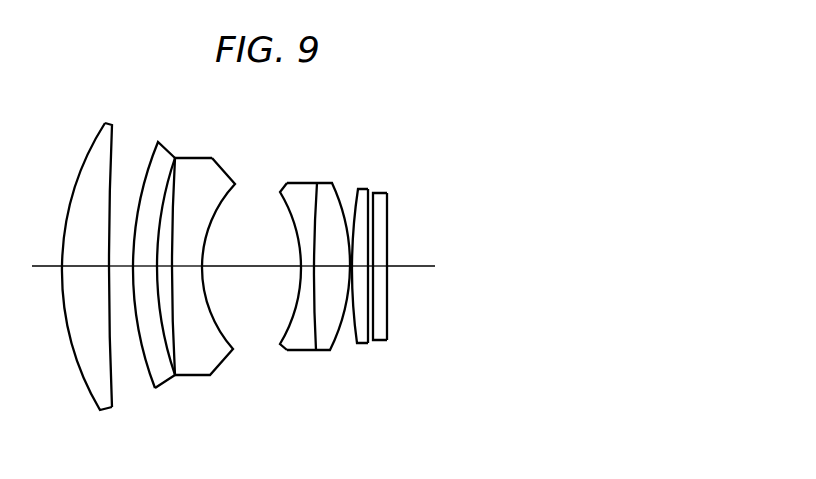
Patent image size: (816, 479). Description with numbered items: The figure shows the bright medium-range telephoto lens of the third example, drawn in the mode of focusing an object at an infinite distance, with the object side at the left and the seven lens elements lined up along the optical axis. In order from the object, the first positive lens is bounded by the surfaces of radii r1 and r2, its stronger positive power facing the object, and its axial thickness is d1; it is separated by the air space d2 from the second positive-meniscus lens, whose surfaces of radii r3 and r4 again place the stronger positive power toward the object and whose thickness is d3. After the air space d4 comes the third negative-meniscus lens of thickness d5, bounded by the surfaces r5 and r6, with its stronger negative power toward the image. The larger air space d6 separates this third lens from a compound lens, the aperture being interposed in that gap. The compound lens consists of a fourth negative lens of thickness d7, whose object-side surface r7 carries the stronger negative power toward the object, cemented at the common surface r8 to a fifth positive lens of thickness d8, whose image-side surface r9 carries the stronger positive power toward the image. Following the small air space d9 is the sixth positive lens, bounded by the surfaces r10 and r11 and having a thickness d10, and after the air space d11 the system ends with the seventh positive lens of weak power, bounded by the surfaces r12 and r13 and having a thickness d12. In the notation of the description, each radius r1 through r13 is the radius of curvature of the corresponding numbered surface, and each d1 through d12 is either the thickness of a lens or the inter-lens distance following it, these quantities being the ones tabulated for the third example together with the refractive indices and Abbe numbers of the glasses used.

The radius of curvature of the first surface r1 is at (92, 143).
The radius of curvature of the second surface r2 is at (115, 148).
The radius of curvature of the third surface r3 is at (136, 162).
The radius of curvature of the fourth surface r4 is at (167, 167).
The radius of curvature of the fifth surface r5 is at (180, 170).
The radius of curvature of the sixth surface r6 is at (216, 214).
The radius of curvature of the seventh surface r7 is at (285, 207).
The radius of curvature of the eighth surface r8 is at (315, 202).
The radius of curvature of the ninth surface r9 is at (341, 190).
The radius of curvature of the tenth surface r10 is at (355, 198).
The radius of curvature of the eleventh surface r11 is at (368, 194).
The radius of curvature of the twelfth surface r12 is at (376, 196).
The radius of curvature of the thirteenth surface r13 is at (388, 208).
The thickness of the first lens d1 is at (73, 270).
The inter-lens distance between the first and second lenses d2 is at (110, 272).
The thickness of the second lens d3 is at (135, 270).
The inter-lens distance between the second and third lenses d4 is at (162, 258).
The thickness of the third lens d5 is at (187, 268).
The inter-lens distance between the third lens and the compound lens d6 is at (250, 268).
The thickness of the fourth lens d7 is at (302, 272).
The thickness of the fifth lens d8 is at (327, 270).
The inter-lens distance between the fifth and sixth lenses d9 is at (352, 270).
The thickness of the sixth lens d10 is at (361, 270).
The inter-lens distance between the sixth and seventh lenses d11 is at (371, 272).
The thickness of the seventh lens d12 is at (380, 272).